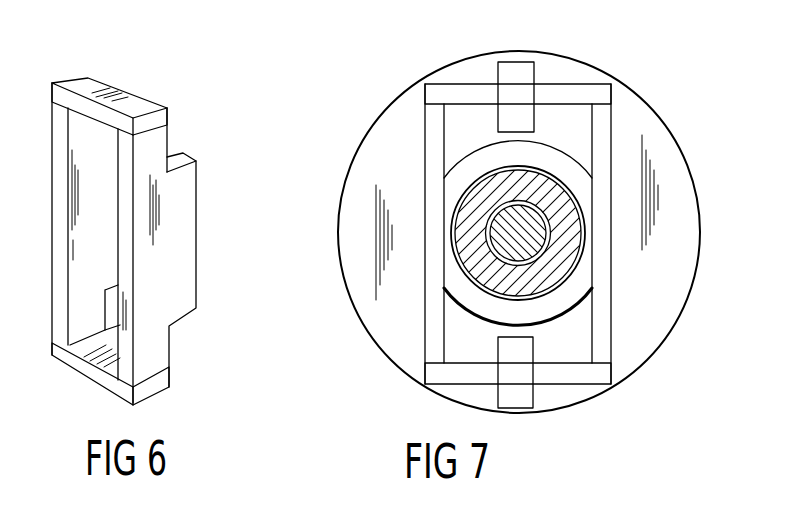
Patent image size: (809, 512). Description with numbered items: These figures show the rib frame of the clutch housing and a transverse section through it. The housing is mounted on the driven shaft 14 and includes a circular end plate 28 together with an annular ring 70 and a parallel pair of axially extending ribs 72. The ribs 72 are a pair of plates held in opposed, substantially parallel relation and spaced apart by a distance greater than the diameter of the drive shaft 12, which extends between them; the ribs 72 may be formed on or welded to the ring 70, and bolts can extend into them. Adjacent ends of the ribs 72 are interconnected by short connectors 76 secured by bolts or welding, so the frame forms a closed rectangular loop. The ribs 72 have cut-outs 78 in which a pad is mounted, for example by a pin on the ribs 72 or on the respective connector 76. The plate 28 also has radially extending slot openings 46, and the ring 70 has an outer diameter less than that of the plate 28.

In FIG. 7, the drive shaft 12 is at (482, 203).
In FIG. 7, the driven shaft 14 is at (530, 245).
In FIG. 7, the end plate 28 is at (652, 310).
In FIG. 7, the opening 46 is at (520, 68).
In FIG. 7, the annular ring 70 is at (473, 303).
In FIG. 6, the ribs 72 is at (88, 242).
In FIG. 7, the ribs 72 is at (433, 125).
In FIG. 6, the connectors 76 is at (142, 107).
In FIG. 7, the connectors 76 is at (467, 93).
In FIG. 6, the cut-outs 78 is at (172, 151).